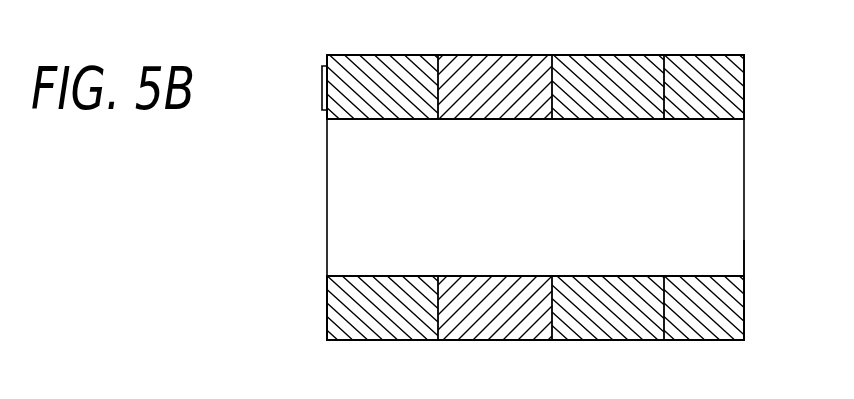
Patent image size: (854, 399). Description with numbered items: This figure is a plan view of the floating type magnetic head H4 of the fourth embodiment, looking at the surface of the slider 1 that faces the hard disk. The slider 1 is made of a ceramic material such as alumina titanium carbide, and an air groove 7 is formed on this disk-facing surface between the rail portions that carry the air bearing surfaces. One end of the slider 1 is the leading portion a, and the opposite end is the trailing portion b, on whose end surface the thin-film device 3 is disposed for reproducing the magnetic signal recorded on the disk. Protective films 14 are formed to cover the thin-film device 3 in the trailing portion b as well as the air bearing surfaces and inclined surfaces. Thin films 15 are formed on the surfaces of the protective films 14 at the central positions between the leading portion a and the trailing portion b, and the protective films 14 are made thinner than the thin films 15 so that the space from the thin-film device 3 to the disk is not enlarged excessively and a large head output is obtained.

The slider 1 is at (320, 202).
The thin-film device 3 is at (322, 93).
The air groove 7 is at (744, 259).
The protective films 14 is at (606, 60).
The thin films 15 is at (498, 60).
The leading portion a is at (749, 183).
The floating type magnetic head H4 is at (749, 240).
The trailing portion b is at (320, 246).